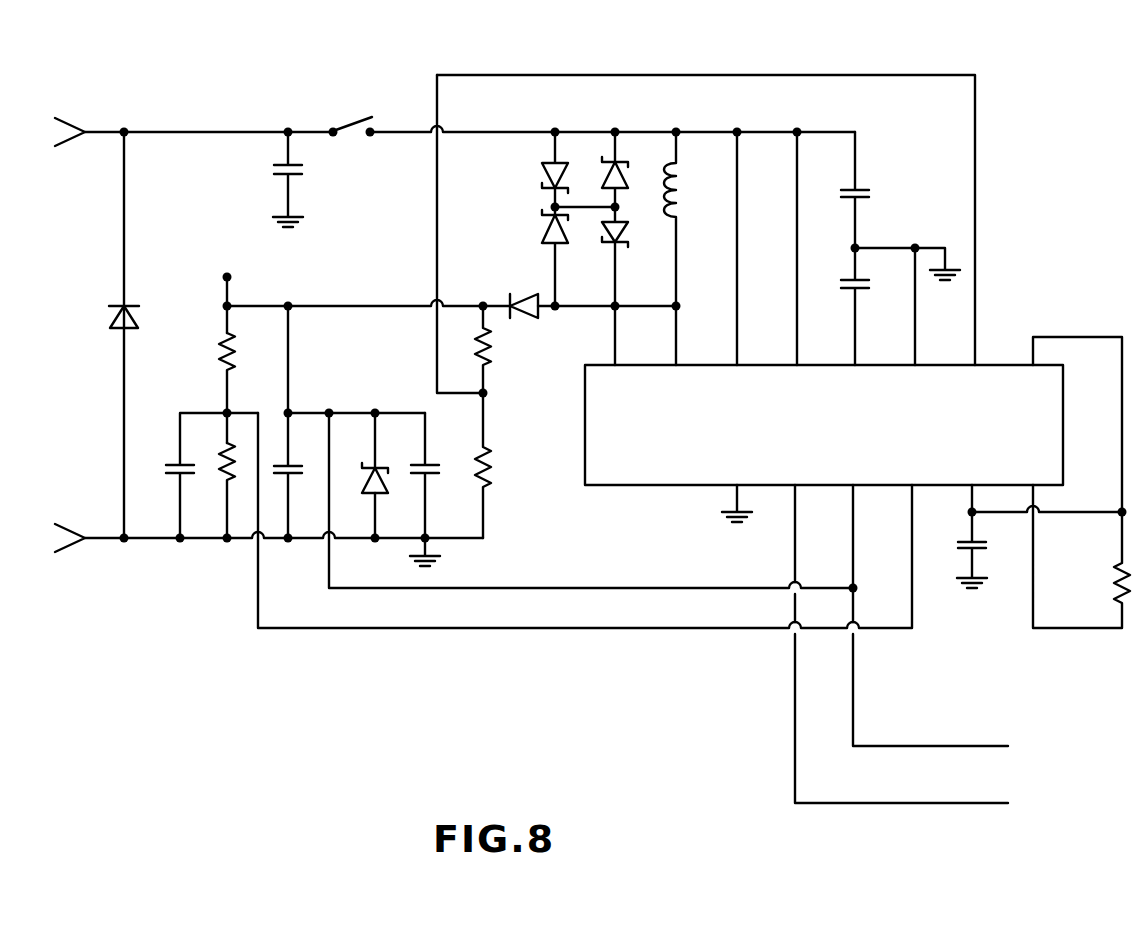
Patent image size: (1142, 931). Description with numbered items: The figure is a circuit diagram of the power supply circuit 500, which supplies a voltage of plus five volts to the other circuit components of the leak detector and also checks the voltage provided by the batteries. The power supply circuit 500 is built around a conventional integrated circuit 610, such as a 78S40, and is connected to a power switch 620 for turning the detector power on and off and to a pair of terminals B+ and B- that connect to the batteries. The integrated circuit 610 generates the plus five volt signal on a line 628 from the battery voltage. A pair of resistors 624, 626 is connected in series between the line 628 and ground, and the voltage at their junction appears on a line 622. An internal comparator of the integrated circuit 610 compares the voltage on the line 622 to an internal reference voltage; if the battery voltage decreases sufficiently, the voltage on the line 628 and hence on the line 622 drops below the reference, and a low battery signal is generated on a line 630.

The power supply circuit 500 is at (125, 92).
The integrated circuit 610 is at (805, 426).
The power switch 620 is at (342, 127).
The line 622 is at (543, 628).
The resistor 624 is at (219, 351).
The resistor 626 is at (222, 478).
The line 628 is at (290, 380).
The line 630 is at (937, 803).